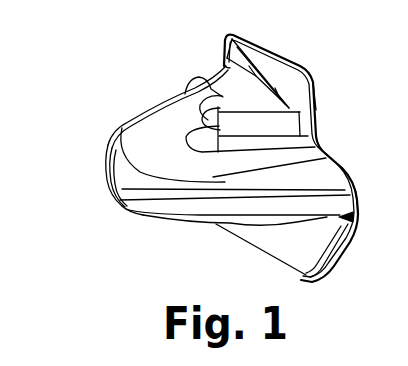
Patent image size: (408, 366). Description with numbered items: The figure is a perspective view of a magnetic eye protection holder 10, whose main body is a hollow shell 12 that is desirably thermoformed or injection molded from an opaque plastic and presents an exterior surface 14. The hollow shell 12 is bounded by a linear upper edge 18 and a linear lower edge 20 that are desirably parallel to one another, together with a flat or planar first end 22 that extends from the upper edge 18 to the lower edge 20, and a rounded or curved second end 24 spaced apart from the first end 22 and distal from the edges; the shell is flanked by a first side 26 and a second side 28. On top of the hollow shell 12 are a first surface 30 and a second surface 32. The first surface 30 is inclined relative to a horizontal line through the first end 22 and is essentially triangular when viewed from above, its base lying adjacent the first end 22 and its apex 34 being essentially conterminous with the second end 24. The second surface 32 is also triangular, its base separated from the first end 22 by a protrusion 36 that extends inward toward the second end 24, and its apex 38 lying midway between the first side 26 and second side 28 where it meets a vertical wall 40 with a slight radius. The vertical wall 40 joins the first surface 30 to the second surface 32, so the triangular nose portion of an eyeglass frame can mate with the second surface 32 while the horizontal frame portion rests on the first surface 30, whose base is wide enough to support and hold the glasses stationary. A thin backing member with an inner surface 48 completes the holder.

The magnetic eye protection holder 10 is at (322, 40).
The hollow shell 12 is at (356, 224).
The exterior surface 14 is at (128, 122).
The upper edge 18 is at (269, 47).
The lower edge 20 is at (302, 280).
The first end 22 is at (322, 136).
The second end 24 is at (111, 192).
The first side 26 is at (186, 78).
The second side 28 is at (360, 207).
The first surface 30 is at (147, 124).
The second surface 32 is at (227, 73).
The apex 34 is at (103, 147).
The protrusion 36 is at (317, 94).
The apex 38 is at (183, 99).
The vertical wall 40 is at (272, 135).
The inner surface 48 is at (347, 169).